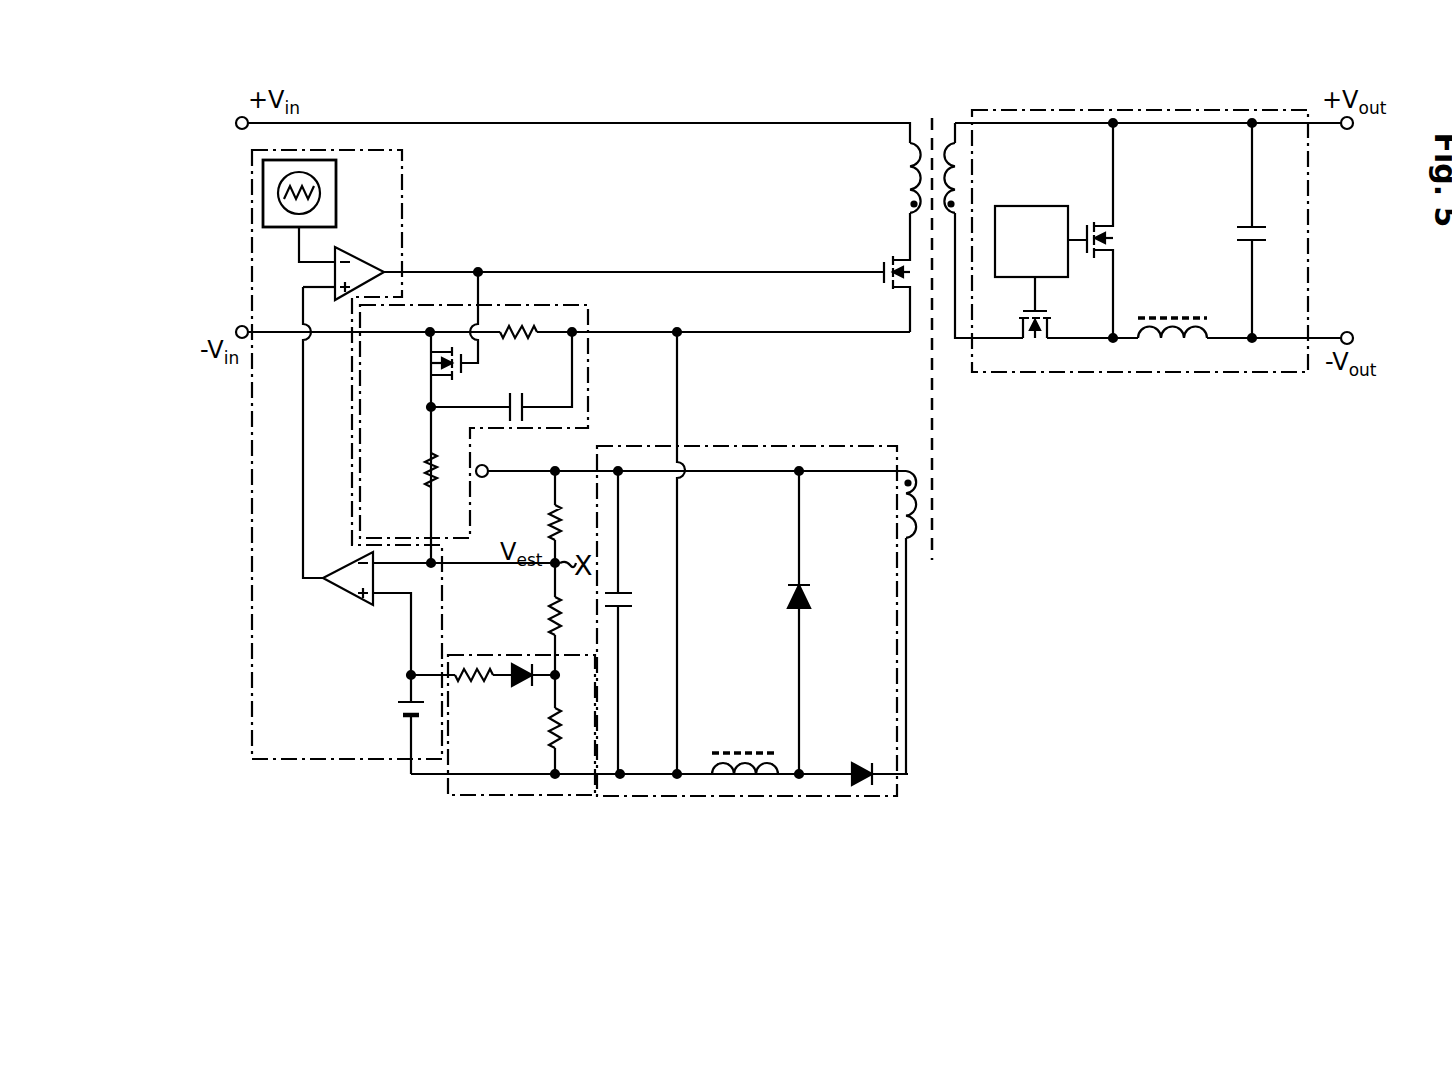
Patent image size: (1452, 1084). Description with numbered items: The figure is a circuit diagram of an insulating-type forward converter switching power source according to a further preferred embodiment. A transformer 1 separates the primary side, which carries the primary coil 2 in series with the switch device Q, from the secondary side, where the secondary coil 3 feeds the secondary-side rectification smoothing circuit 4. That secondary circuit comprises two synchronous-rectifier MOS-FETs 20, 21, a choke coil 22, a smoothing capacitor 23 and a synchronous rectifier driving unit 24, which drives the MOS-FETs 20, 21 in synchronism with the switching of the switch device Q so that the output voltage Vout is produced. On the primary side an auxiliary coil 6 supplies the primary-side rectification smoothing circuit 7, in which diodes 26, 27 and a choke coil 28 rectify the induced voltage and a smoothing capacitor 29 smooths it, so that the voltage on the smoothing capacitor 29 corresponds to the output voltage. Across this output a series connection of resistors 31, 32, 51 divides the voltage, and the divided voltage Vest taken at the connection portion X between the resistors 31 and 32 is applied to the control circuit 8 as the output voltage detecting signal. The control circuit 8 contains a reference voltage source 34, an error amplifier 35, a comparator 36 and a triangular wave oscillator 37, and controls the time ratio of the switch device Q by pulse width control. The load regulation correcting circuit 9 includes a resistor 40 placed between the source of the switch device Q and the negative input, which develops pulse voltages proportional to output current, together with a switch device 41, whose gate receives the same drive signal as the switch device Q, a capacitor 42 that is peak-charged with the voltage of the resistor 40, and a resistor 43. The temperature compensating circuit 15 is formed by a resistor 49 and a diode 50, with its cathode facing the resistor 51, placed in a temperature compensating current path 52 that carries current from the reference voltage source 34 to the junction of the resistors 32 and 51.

The transformer 1 is at (940, 412).
The primary coil 2 is at (908, 183).
The secondary coil 3 is at (962, 172).
The secondary-side rectification smoothing circuit 4 is at (1072, 110).
The auxiliary coil 6 is at (918, 492).
The primary-side rectification smoothing circuit 7 is at (733, 446).
The control circuit 8 is at (402, 212).
The load regulation correcting circuit 9 is at (588, 370).
The temperature compensating circuit 15 is at (565, 795).
The MOS-FET 20 is at (1050, 322).
The MOS-FET 21 is at (1115, 240).
The choke coil 22 is at (1170, 340).
The smoothing capacitor 23 is at (1262, 225).
The synchronous rectifier driving unit 24 is at (1035, 206).
The diode 26 is at (812, 597).
The diode 27 is at (859, 762).
The choke coil 28 is at (745, 753).
The smoothing capacitor 29 is at (626, 592).
The voltage dividing resistor 31 is at (553, 501).
The voltage dividing resistor 32 is at (553, 610).
The reference voltage source 34 is at (396, 704).
The error amplifier 35 is at (345, 598).
The comparator 36 is at (368, 252).
The triangular wave oscillator 37 is at (337, 181).
The resistor 40 is at (522, 325).
The switch device 41 is at (430, 364).
The capacitor 42 is at (524, 400).
The resistor 43 is at (430, 451).
The resistor 49 is at (467, 668).
The diode 50 is at (521, 687).
The resistor 51 is at (551, 739).
The temperature compensating current path 52 is at (502, 680).